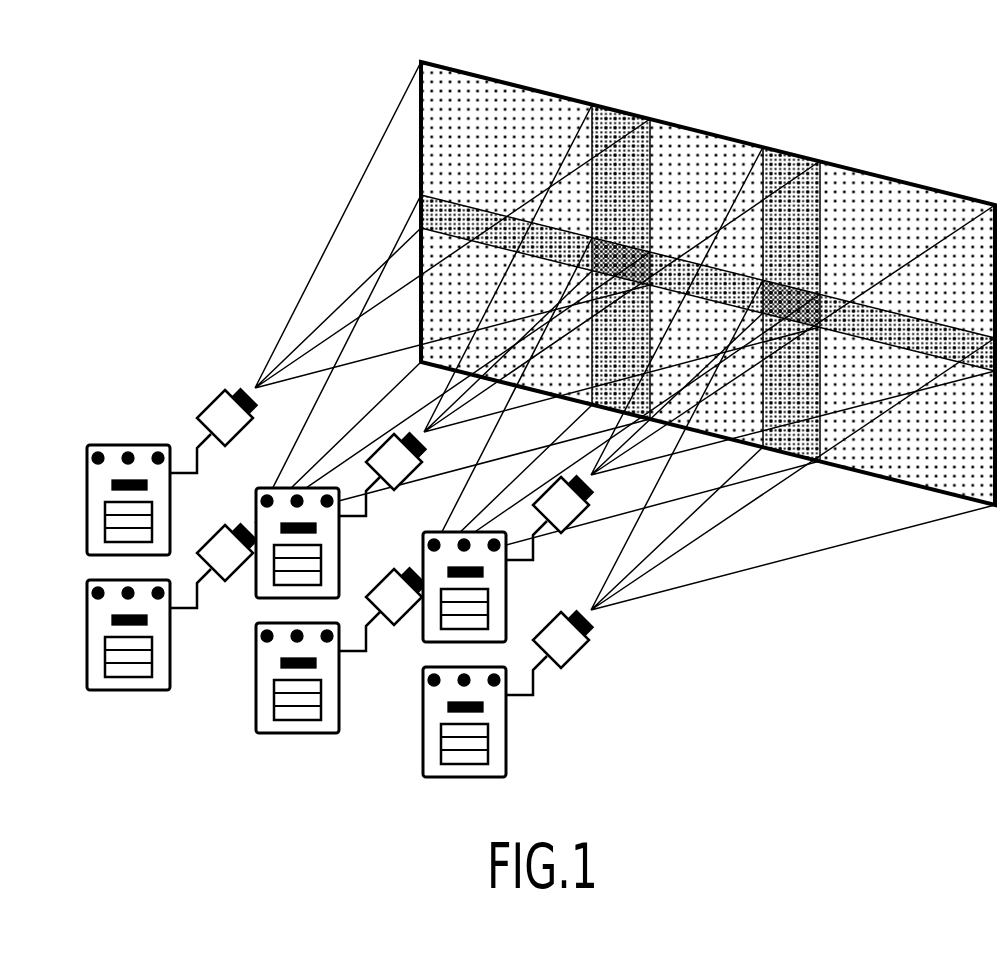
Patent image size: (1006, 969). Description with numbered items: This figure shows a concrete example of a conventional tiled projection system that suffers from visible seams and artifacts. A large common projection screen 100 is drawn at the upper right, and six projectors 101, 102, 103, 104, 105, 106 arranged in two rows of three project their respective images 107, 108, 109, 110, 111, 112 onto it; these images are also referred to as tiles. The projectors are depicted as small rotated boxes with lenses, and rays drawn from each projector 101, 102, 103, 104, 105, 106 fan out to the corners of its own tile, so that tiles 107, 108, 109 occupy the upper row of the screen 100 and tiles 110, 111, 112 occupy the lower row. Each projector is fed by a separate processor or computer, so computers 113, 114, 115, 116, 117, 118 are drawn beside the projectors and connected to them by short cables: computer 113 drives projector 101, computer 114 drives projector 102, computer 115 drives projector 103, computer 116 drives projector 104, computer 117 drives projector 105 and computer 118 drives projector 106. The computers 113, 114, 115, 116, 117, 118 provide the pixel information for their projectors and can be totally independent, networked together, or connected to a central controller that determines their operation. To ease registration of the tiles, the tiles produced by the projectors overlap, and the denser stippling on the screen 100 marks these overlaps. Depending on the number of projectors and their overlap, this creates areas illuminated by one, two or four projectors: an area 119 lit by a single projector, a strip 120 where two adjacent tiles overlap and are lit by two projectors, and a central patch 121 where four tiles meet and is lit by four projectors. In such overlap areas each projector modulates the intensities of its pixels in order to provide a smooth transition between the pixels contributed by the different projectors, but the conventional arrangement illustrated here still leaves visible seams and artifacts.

The projection screen 100 is at (540, 93).
The projector 101 is at (423, 270).
The projector 102 is at (593, 312).
The projector 103 is at (764, 355).
The projector 104 is at (423, 402).
The projector 105 is at (593, 446).
The projector 106 is at (764, 489).
The image tile 107 is at (535, 173).
The image tile 108 is at (706, 216).
The image tile 109 is at (879, 259).
The image tile 110 is at (535, 307).
The image tile 111 is at (706, 349).
The image tile 112 is at (879, 392).
The computer 113 is at (149, 494).
The computer 114 is at (318, 537).
The computer 115 is at (485, 581).
The computer 116 is at (149, 629).
The computer 117 is at (318, 672).
The computer 118 is at (485, 716).
The area illuminated by one projector 119 is at (733, 162).
The area illuminated by two projectors 120 is at (808, 206).
The area illuminated by four projectors 121 is at (824, 292).